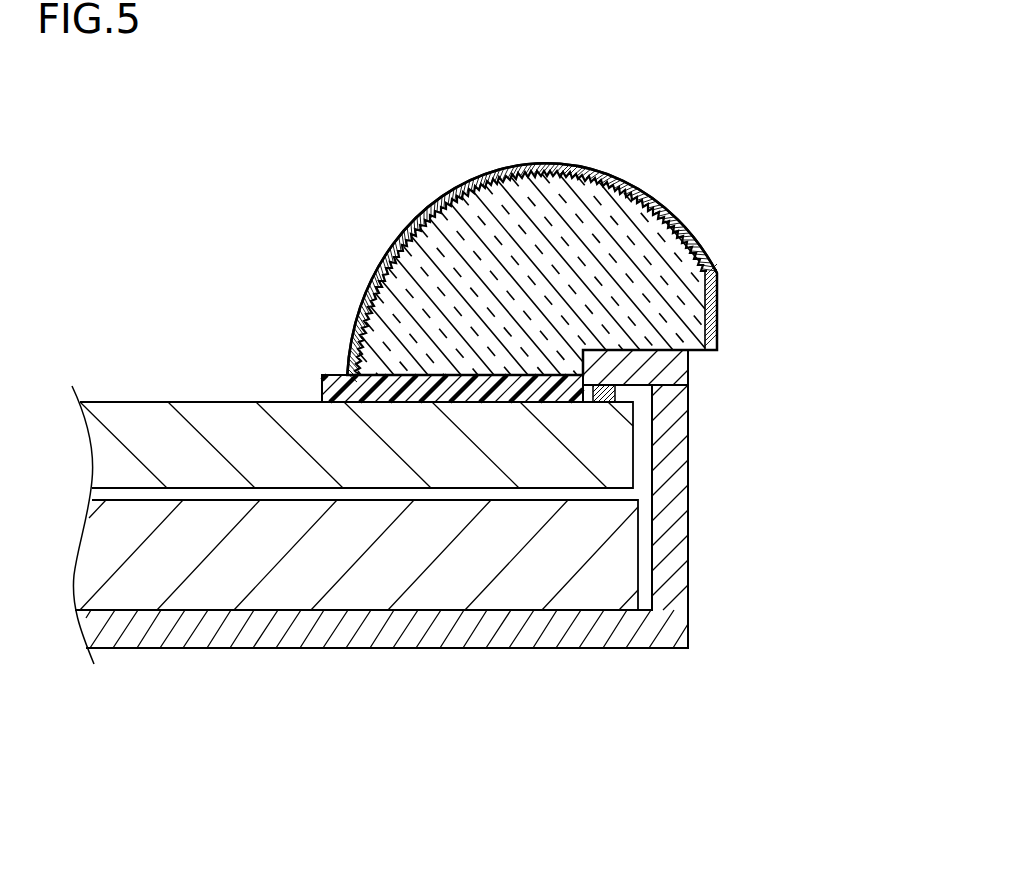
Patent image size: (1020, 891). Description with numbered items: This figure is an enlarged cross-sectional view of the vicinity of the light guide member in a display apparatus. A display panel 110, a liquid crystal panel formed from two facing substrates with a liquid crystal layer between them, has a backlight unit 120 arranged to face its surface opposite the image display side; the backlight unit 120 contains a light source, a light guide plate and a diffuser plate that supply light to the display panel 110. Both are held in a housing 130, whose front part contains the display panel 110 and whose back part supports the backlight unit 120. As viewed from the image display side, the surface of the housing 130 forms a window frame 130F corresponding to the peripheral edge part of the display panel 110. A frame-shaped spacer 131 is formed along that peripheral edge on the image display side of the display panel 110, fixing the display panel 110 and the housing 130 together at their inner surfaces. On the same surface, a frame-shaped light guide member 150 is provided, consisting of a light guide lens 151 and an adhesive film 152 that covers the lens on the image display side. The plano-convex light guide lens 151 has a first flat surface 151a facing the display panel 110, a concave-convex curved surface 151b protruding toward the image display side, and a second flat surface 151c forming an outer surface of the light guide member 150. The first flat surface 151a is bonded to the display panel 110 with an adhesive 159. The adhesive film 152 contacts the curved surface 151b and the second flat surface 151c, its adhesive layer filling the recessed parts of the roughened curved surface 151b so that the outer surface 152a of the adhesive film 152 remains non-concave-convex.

The display panel 110 is at (160, 427).
The backlight unit 120 is at (210, 583).
The housing 130 is at (320, 623).
The window frame 130F is at (618, 375).
The spacer 131 is at (600, 402).
The light guide member 150 is at (652, 81).
The light guide lens 151 is at (562, 267).
The first flat surface 151a is at (350, 367).
The curved surface 151b is at (448, 198).
The second flat surface 151c is at (710, 312).
The adhesive film 152 is at (590, 177).
The surface of the adhesive film 152a is at (673, 200).
The adhesive 159 is at (323, 385).